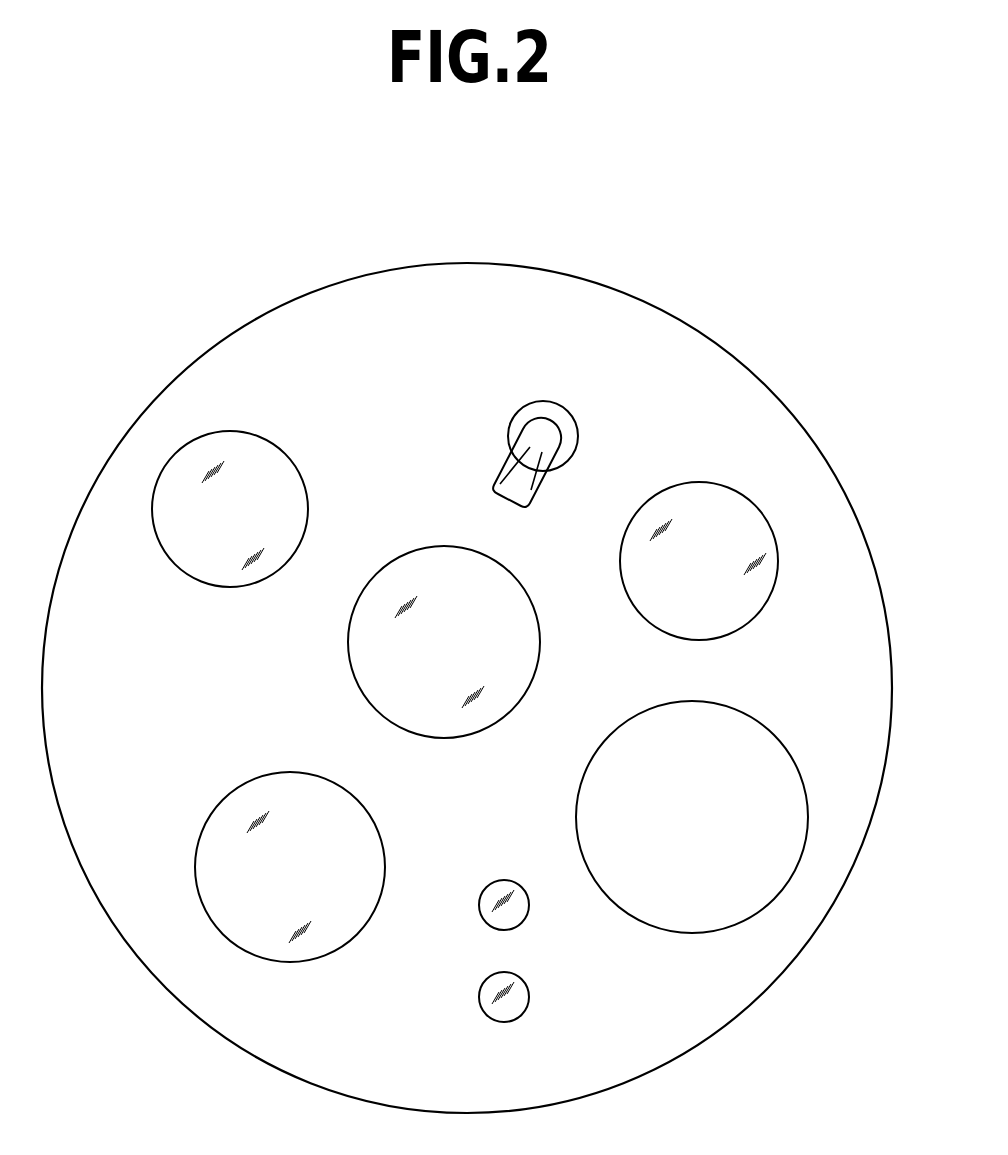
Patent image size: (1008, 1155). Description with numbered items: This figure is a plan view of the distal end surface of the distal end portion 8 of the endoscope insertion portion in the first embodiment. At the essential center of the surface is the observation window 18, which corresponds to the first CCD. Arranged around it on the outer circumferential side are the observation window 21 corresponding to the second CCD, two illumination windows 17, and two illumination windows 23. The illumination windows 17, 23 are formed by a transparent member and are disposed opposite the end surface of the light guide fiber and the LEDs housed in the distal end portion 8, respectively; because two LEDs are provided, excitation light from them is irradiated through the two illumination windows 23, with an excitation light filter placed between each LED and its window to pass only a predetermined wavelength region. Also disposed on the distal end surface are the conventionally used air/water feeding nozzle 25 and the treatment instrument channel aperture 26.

The distal end portion 8 is at (800, 418).
The illumination window 17 is at (308, 505).
The observation window 18 is at (540, 645).
The observation window 21 is at (385, 863).
The illumination window 23 is at (529, 906).
The air/water feeding nozzle 25 is at (543, 477).
The treatment instrument channel aperture 26 is at (790, 776).